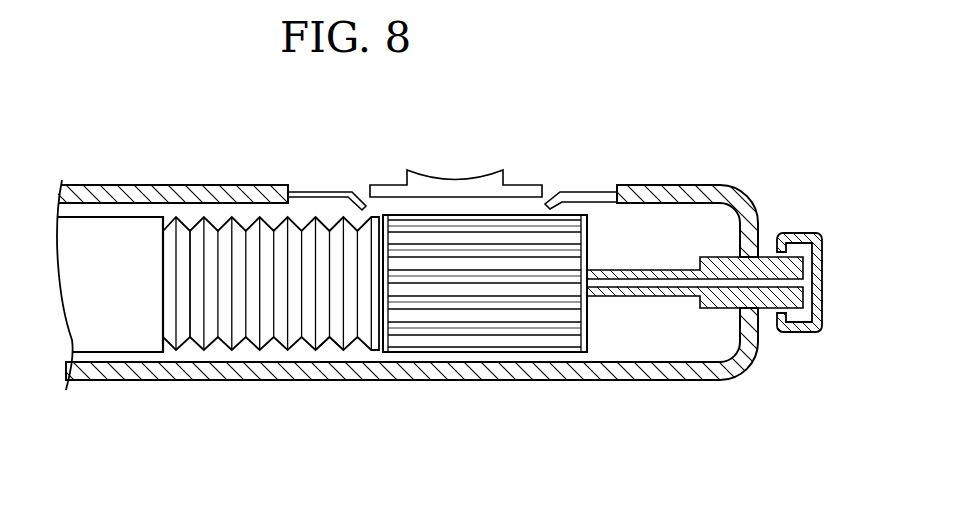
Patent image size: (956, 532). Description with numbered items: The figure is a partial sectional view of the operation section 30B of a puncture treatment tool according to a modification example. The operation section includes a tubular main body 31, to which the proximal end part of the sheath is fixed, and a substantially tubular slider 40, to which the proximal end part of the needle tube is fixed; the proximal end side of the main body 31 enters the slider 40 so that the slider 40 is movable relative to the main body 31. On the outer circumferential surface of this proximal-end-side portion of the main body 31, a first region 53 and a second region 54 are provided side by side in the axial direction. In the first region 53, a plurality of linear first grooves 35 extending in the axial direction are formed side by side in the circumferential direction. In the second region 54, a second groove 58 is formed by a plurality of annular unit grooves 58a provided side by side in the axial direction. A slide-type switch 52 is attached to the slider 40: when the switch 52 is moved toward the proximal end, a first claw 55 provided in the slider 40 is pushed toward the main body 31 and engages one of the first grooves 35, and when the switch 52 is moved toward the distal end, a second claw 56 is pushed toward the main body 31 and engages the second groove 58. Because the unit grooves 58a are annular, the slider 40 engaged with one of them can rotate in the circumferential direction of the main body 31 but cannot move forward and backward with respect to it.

The operation section 30B is at (382, 168).
The main body 31 is at (115, 325).
The first groove 35 is at (568, 297).
The slider 40 is at (160, 199).
The switch 52 is at (472, 178).
The first region 53 is at (485, 333).
The second region 54 is at (326, 350).
The first claw 55 is at (600, 196).
The second claw 56 is at (322, 196).
The second groove 58 is at (271, 345).
The unit groove 58a is at (220, 322).